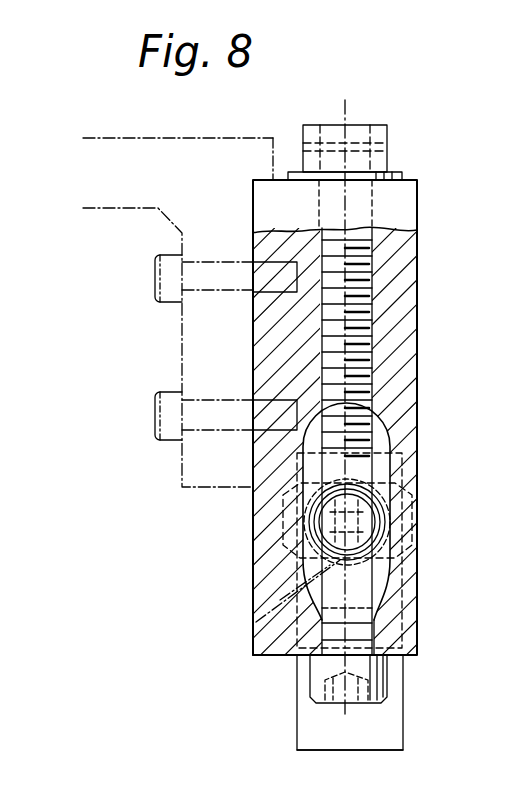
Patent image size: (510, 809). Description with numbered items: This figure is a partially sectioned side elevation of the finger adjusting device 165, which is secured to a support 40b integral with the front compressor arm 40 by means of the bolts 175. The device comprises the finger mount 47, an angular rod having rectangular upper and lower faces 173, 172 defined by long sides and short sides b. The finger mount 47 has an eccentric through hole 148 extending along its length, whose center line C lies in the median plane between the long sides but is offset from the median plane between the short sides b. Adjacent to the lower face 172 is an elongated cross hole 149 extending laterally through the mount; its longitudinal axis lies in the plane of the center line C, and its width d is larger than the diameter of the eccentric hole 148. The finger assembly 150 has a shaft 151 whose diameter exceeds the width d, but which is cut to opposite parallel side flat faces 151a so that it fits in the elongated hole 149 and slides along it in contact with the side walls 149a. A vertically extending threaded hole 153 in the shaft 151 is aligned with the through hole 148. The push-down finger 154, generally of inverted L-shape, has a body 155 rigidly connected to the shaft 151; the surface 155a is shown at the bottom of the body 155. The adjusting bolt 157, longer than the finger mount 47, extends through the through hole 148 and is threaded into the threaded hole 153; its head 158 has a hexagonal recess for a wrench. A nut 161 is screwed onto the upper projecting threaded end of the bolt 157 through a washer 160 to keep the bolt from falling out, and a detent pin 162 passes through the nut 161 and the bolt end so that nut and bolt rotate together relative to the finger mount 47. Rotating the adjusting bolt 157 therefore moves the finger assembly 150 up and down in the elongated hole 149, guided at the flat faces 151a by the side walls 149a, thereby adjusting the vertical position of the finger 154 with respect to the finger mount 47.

The front compressor arm 40 is at (200, 135).
The support 40b is at (182, 355).
The finger mount 47 is at (419, 253).
The eccentric through hole 148 is at (366, 332).
The elongated cross hole 149 is at (382, 430).
The side walls of the elongated hole 149a is at (305, 488).
The finger assembly 150 is at (380, 560).
The shaft 151 is at (300, 560).
The side flat faces 151a is at (312, 530).
The threaded hole 153 is at (256, 622).
The push-down finger 154 is at (403, 690).
The body 155 is at (405, 740).
The base block bottom surface 155a is at (360, 742).
The adjusting bolt 157 is at (375, 632).
The head 158 is at (318, 686).
The washer 160 is at (403, 176).
The nut 161 is at (388, 140).
The detent pin 162 is at (348, 394).
The finger adjusting device 165 is at (425, 377).
The lower face 172 is at (262, 657).
The upper face 173 is at (262, 179).
The bolts 175 is at (154, 288).
The center line C is at (372, 300).
The short sides b is at (509, 305).
The width d is at (352, 450).